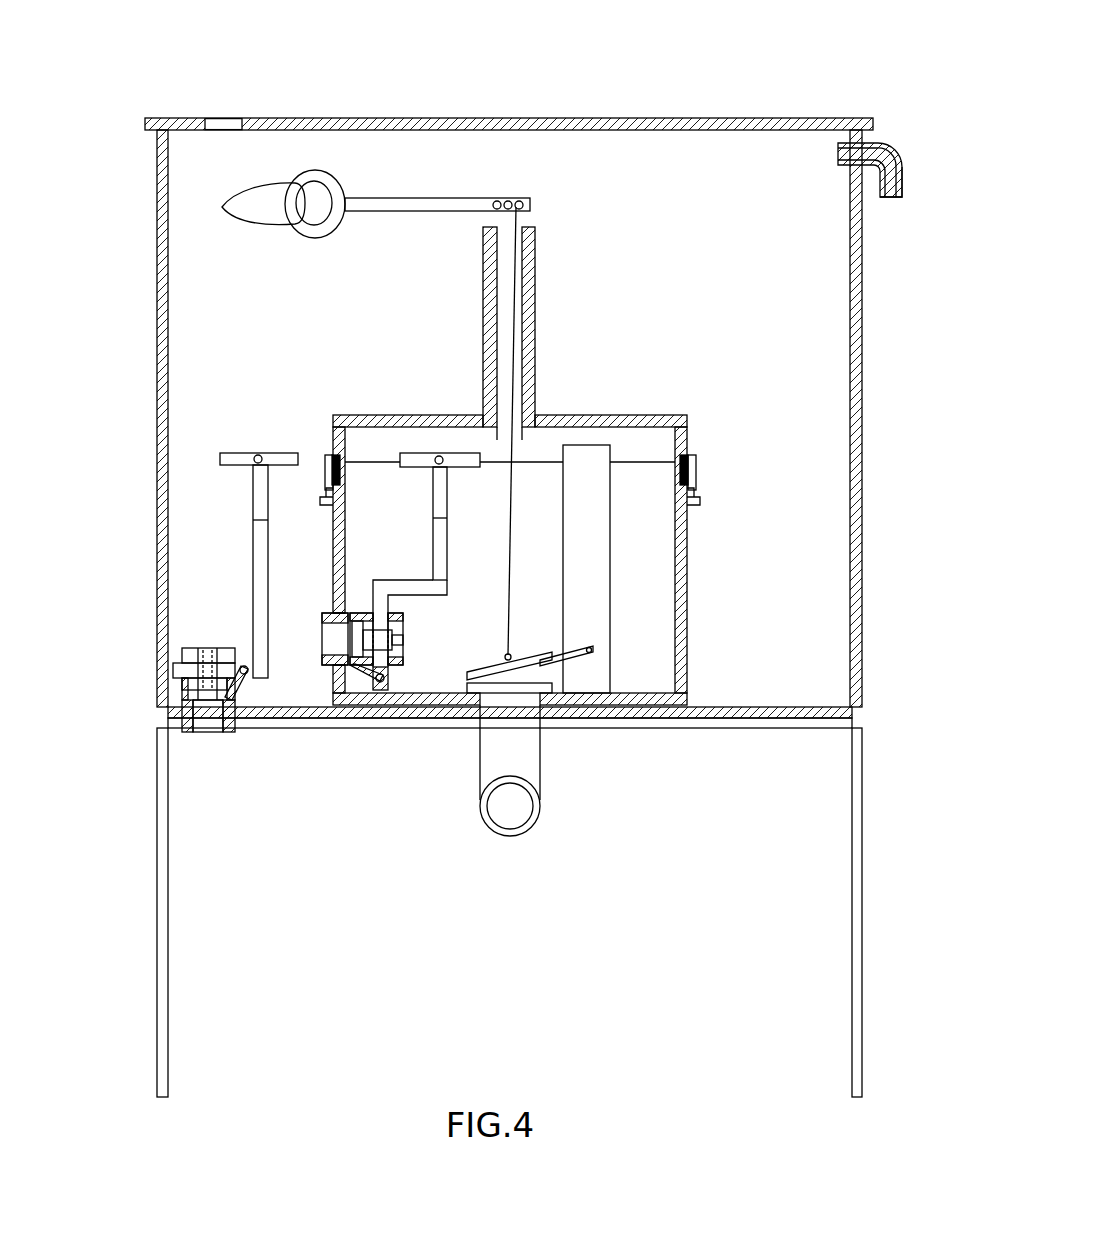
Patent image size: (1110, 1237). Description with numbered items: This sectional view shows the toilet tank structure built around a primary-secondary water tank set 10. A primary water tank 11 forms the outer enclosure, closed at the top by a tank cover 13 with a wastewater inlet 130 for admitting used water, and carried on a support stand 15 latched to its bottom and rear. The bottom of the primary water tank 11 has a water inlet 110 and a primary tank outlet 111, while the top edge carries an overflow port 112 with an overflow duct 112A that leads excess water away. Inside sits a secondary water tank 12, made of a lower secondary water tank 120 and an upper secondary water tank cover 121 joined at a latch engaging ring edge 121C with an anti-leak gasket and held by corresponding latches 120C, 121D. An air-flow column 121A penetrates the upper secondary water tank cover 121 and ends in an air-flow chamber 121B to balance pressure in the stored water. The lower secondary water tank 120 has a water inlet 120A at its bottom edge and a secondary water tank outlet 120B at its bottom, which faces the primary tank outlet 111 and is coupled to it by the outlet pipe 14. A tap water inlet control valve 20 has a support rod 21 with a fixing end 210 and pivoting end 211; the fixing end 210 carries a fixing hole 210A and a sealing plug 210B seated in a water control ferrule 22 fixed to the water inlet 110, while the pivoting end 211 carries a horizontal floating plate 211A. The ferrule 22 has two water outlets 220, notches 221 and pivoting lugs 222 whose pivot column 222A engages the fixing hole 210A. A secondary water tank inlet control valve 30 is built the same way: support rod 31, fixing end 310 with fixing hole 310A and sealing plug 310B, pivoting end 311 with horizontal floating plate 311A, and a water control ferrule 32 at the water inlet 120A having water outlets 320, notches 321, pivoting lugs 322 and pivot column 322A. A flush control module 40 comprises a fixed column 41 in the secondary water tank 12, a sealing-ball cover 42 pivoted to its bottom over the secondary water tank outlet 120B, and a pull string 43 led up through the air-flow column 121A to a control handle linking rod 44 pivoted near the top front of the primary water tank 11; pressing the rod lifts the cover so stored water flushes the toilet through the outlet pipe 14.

The primary-secondary water tank set 10 is at (508, 552).
The primary water tank 11 is at (856, 425).
The secondary water tank 12 is at (687, 578).
The tank cover 13 is at (505, 73).
The outlet pipe 14 is at (510, 810).
The support stand 15 is at (857, 940).
The tap water inlet control valve 20 is at (200, 585).
The support rod 21 is at (258, 590).
The water control ferrule 22 is at (180, 716).
The secondary water tank inlet control valve 30 is at (376, 617).
The support rod 31 is at (440, 520).
The water control ferrule 32 is at (352, 668).
The flush control module 40 is at (303, 335).
The fixed column 41 is at (600, 607).
The sealing-ball cover 42 is at (590, 648).
The pull string 43 is at (514, 205).
The control handle linking rod 44 is at (270, 207).
The water inlet 110 is at (178, 713).
The primary tank outlet 111 is at (555, 720).
The overflow port 112 is at (881, 146).
The overflow duct 112A is at (885, 145).
The lower secondary water tank 120 is at (508, 437).
The water inlet 120A is at (340, 660).
The secondary water tank outlet 120B is at (560, 705).
The latch 120C is at (700, 497).
The upper secondary water tank cover 121 is at (598, 412).
The air-flow column 121A is at (538, 240).
The air-flow chamber 121B is at (650, 450).
The latch engaging ring edge 121C is at (330, 470).
The latch 121D is at (700, 490).
The wastewater inlet 130 is at (225, 125).
The fixing end 210 is at (190, 672).
The fixing hole 210A is at (247, 675).
The sealing plug 210B is at (190, 690).
The pivoting end 211 is at (273, 421).
The horizontal floating plate 211A is at (295, 453).
The water outlet 220 is at (190, 698).
The notch 221 is at (188, 655).
The pivoting lug 222 is at (242, 685).
The pivot column 222A is at (244, 680).
The fixing end 310 is at (382, 605).
The fixing hole 310A is at (396, 668).
The sealing plug 310B is at (372, 668).
The pivoting end 311 is at (436, 417).
The horizontal floating plate 311A is at (410, 453).
The water outlet 320 is at (360, 668).
The notch 321 is at (385, 682).
The pivoting lug 322 is at (380, 660).
The pivot column 322A is at (380, 690).